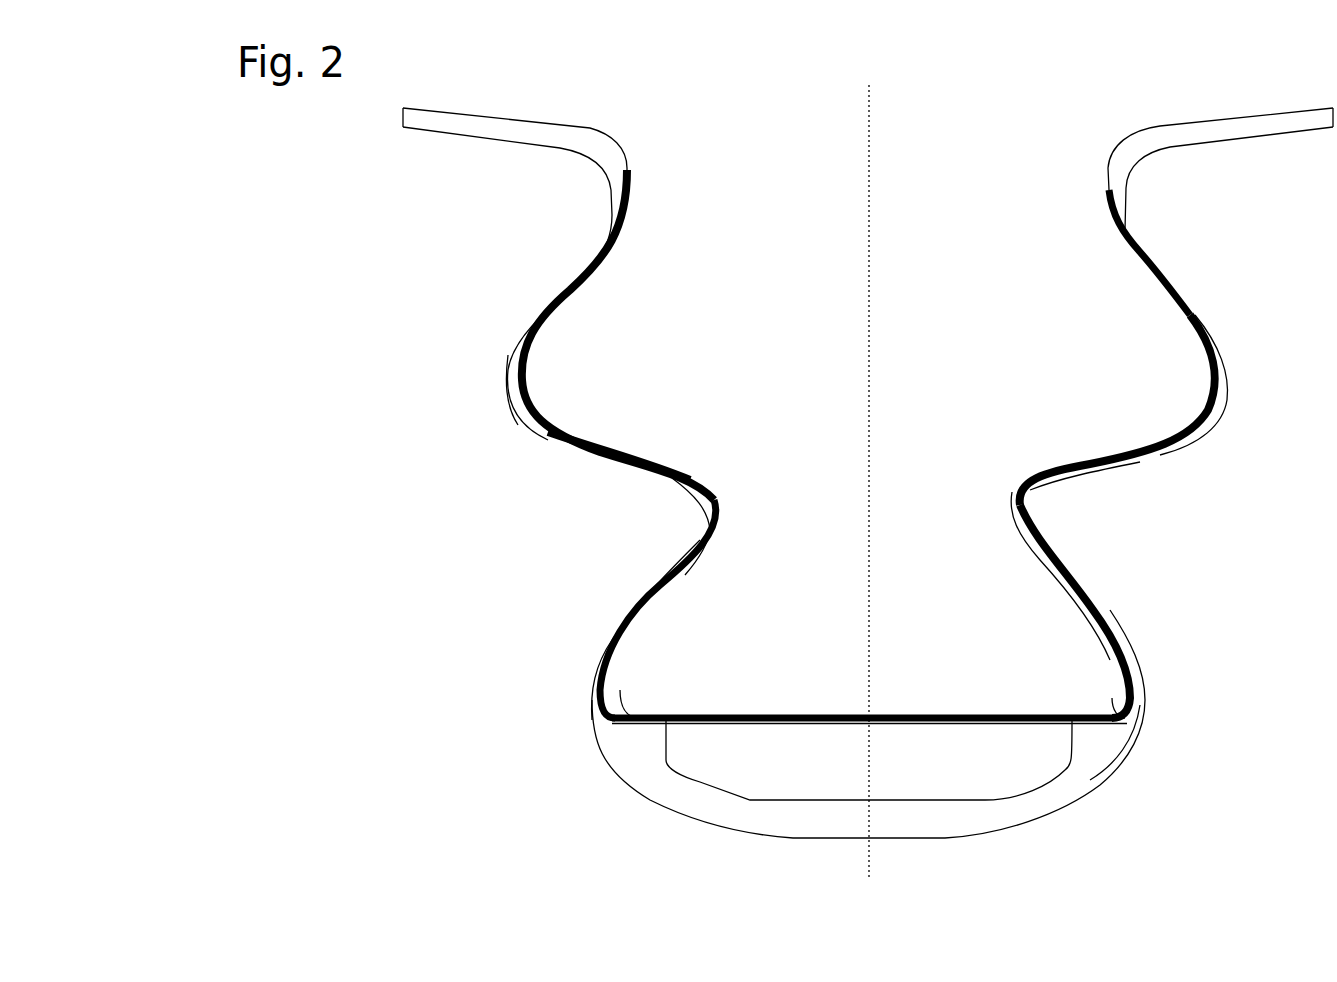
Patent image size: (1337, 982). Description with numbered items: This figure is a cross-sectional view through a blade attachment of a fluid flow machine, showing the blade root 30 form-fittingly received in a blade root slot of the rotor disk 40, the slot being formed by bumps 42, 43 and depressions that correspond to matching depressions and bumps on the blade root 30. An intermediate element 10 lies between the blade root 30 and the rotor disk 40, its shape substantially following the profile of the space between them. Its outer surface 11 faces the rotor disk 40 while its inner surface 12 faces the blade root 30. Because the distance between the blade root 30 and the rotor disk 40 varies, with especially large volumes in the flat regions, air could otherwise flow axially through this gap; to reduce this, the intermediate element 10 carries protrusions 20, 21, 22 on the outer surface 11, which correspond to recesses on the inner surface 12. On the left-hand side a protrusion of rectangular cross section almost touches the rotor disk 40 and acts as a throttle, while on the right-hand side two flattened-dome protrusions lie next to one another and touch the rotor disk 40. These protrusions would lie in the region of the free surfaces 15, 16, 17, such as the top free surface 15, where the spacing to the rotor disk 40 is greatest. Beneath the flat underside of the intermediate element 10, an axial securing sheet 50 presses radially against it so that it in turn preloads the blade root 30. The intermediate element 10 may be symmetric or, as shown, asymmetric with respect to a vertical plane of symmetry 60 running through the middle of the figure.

The intermediate element 10 is at (990, 717).
The outer surface 11 is at (1165, 275).
The inner surface 12 is at (1170, 308).
The free surface 15 is at (1102, 142).
The free surface 16 is at (1060, 506).
The free surface 17 is at (1112, 787).
The protrusion 20 is at (1108, 470).
The protrusion 21 is at (1163, 458).
The protrusion 22 is at (618, 465).
The blade root 30 is at (792, 337).
The rotor disk 40 is at (472, 437).
The bump on the rotor disk 42 is at (627, 170).
The bump on the rotor disk 43 is at (725, 515).
The axial securing sheet 50 is at (955, 785).
The plane of symmetry 60 is at (868, 765).